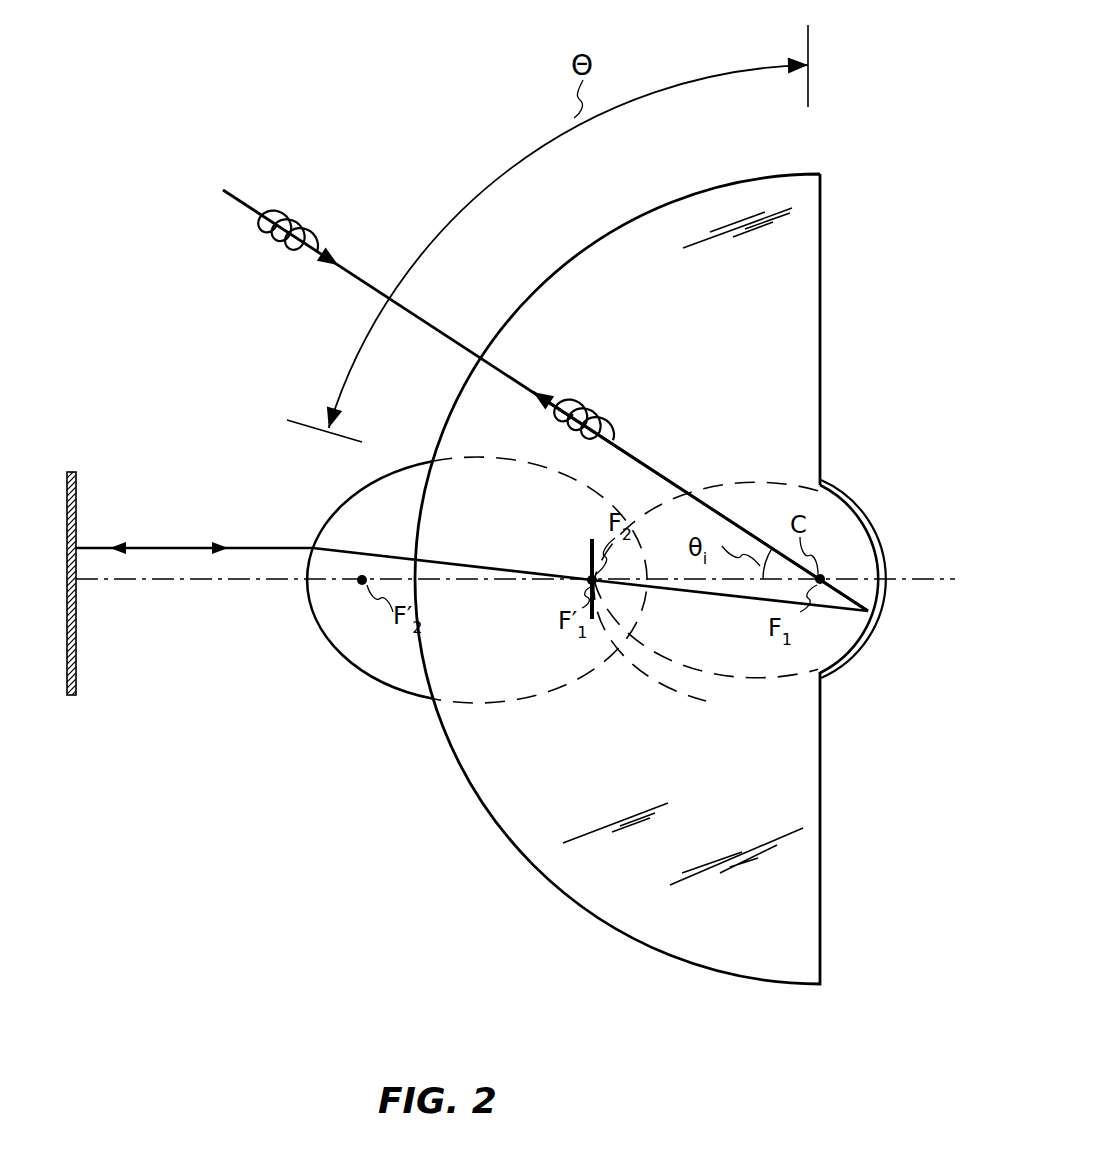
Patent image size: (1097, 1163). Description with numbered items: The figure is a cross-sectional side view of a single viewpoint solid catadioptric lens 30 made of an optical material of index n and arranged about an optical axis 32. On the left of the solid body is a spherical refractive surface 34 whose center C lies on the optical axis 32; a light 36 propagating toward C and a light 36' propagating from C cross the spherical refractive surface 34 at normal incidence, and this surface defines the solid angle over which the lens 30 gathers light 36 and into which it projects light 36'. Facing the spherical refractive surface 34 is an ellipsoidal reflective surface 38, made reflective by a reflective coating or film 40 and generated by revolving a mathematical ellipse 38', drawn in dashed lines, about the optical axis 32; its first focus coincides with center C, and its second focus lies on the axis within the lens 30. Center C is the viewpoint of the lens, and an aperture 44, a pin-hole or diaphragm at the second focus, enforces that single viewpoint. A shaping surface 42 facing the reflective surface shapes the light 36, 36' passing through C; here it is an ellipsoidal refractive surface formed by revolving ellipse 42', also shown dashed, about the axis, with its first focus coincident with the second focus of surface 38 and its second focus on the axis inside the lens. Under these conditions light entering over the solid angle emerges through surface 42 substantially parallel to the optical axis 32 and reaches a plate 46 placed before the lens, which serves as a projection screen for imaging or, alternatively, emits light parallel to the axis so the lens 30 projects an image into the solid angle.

The single viewpoint solid catadioptric lens 30 is at (262, 58).
The optical axis 32 is at (147, 584).
The spherical refractive surface 34 is at (592, 240).
The light 36 is at (545, 392).
The light 36' is at (700, 489).
The ellipsoidal reflective surface 38 is at (706, 551).
The ellipse 38' is at (649, 674).
The reflective coating or film 40 is at (872, 523).
The shaping surface 42 is at (348, 580).
The ellipse 42' is at (539, 612).
The aperture 44 is at (588, 553).
The plate 46 is at (80, 690).